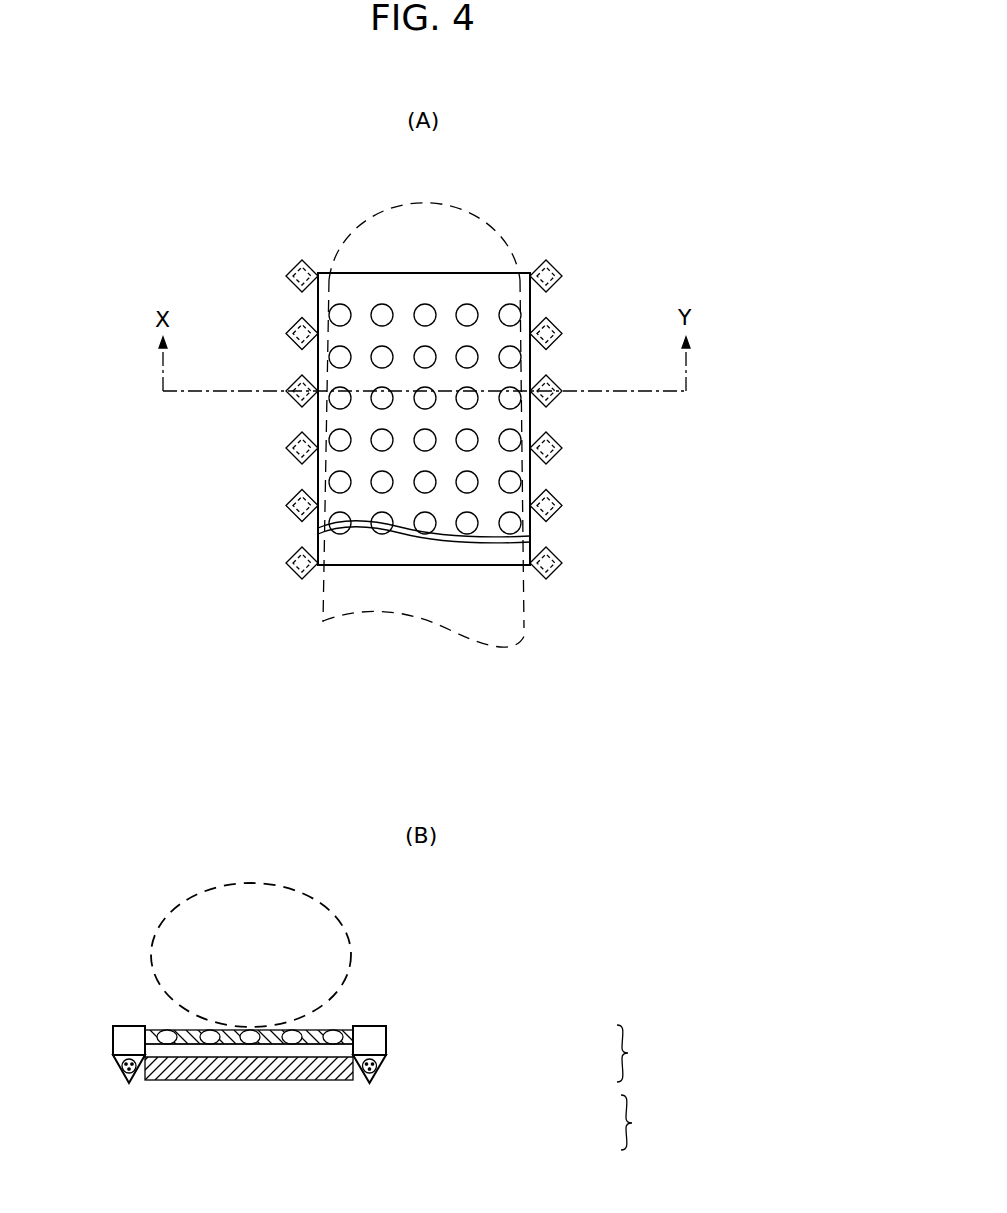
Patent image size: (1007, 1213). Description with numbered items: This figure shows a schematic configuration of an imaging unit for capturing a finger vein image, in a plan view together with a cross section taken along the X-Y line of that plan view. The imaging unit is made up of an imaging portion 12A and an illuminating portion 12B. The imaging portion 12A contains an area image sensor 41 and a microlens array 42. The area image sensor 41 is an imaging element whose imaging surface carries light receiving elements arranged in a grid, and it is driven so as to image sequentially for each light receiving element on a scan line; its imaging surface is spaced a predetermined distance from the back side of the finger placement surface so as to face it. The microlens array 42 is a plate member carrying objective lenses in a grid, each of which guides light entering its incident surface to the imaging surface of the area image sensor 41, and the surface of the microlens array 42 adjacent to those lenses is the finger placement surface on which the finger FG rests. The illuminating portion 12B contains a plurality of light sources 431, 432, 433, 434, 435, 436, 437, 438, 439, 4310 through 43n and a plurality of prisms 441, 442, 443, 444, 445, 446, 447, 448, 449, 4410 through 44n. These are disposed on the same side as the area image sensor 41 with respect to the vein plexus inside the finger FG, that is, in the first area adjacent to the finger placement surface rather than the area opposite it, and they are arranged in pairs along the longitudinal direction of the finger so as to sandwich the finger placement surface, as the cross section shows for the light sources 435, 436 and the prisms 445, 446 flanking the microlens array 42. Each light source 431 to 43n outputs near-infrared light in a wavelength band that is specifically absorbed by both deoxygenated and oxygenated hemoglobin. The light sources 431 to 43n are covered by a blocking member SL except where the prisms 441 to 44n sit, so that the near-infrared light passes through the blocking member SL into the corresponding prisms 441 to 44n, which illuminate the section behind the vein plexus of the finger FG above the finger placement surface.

The prism 441 is at (295, 267).
The prism 442 is at (562, 276).
The prism 443 is at (295, 325).
The prism 444 is at (562, 334).
The prism 445 is at (295, 383).
The prism 446 is at (562, 391).
The prism 447 is at (295, 440).
The prism 448 is at (562, 448).
The prism 449 is at (295, 497).
The prism 4410 is at (562, 506).
The prism 44n is at (562, 563).
The light source 431 is at (290, 280).
The light source 432 is at (558, 282).
The light source 433 is at (290, 338).
The light source 434 is at (558, 339).
The light source 435 is at (290, 395).
The light source 436 is at (558, 396).
The light source 437 is at (290, 452).
The light source 438 is at (558, 454).
The light source 439 is at (291, 510).
The light source 4310 is at (558, 511).
The light source 43n is at (558, 569).
The microlens array 42 is at (482, 566).
The area image sensor 41 is at (342, 1082).
The illuminating portion 12B is at (726, 1057).
The imaging portion 12A is at (733, 1126).
The finger FG is at (487, 212).
The blocking member SL is at (126, 1085).